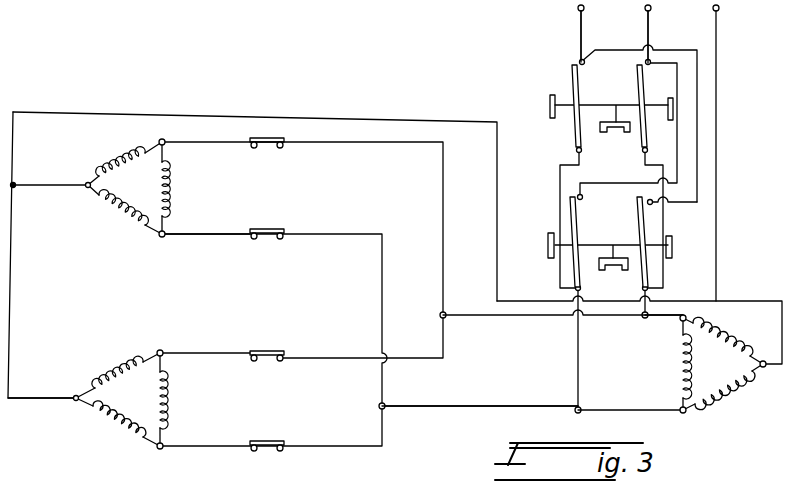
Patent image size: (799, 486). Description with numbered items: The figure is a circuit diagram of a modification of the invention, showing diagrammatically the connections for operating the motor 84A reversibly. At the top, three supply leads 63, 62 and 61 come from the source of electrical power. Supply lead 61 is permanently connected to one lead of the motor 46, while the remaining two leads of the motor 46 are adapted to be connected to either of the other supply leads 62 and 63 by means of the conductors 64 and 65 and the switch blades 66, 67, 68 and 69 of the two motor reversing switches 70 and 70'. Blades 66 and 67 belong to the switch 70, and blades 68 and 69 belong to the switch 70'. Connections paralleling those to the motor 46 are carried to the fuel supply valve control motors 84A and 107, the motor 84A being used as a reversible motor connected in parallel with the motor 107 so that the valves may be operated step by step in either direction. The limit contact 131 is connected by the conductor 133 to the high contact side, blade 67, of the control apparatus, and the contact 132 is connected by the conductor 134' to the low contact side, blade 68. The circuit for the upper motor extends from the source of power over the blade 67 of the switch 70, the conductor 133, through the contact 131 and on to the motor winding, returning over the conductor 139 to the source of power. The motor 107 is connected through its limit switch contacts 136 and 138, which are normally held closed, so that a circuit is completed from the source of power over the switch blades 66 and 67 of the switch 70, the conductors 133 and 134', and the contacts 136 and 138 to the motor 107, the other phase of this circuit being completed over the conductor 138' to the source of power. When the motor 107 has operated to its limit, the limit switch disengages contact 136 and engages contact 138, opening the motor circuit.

The conductor 139 is at (62, 175).
The motor 84A is at (138, 228).
The contact 132 is at (277, 140).
The contact 131 is at (268, 232).
The contact 138 is at (285, 344).
The contact 136 is at (265, 443).
The conductor 138' is at (42, 381).
The motor 107 is at (130, 440).
The power supply lead 63 is at (588, 30).
The power supply lead 62 is at (650, 36).
The supply lead 61 is at (716, 37).
The motor reversing switch 70' is at (590, 111).
The switch blade 69 is at (573, 78).
The switch blade 68 is at (640, 78).
The motor reversing switch 70 is at (589, 238).
The switch blade 67 is at (578, 225).
The switch blade 66 is at (645, 225).
The conductor 134' is at (563, 330).
The conductor 64 is at (659, 321).
The conductor 65 is at (620, 408).
The conductor 133 is at (496, 405).
The motor 46 is at (752, 384).